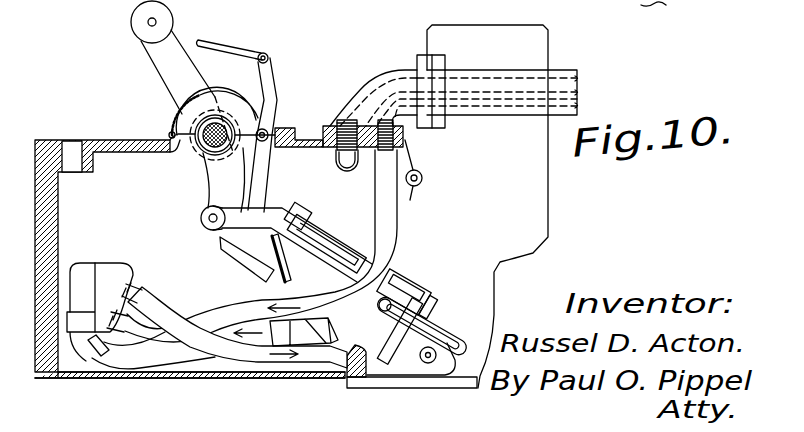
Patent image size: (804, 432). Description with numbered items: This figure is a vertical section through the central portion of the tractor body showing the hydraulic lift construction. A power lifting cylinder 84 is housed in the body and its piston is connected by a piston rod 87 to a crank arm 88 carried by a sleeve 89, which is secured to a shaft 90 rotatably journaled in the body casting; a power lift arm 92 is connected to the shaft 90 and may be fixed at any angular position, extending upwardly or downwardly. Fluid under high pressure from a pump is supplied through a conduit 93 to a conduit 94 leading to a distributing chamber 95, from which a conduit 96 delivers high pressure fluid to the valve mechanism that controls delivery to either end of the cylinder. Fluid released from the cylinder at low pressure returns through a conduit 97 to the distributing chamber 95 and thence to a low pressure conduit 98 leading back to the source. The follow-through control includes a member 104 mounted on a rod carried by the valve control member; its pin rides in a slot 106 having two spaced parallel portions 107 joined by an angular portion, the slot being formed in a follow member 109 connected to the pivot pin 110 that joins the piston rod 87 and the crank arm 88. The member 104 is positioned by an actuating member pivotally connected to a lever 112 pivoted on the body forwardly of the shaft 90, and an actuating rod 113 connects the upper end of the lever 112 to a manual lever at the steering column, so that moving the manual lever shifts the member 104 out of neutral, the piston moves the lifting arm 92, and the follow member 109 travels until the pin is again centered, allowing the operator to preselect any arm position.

The power lifting cylinder 84 is at (252, 293).
The piston rod 87 is at (222, 232).
The crank arm 88 is at (220, 181).
The sleeve 89 is at (203, 152).
The shaft 90 is at (198, 123).
The power lift arm 92 is at (165, 42).
The conduit 93 is at (520, 104).
The conduit 94 is at (394, 228).
The distributing chamber 95 is at (84, 270).
The conduit 96 is at (252, 365).
The conduit 97 is at (148, 300).
The low pressure conduit 98 is at (557, 80).
The member 104 is at (390, 277).
The slot 106 is at (410, 316).
The parallel portion 107 is at (325, 235).
The follow member 109 is at (270, 210).
The pivot pin 110 is at (201, 216).
The lever 112 is at (273, 82).
The actuating rod 113 is at (245, 48).